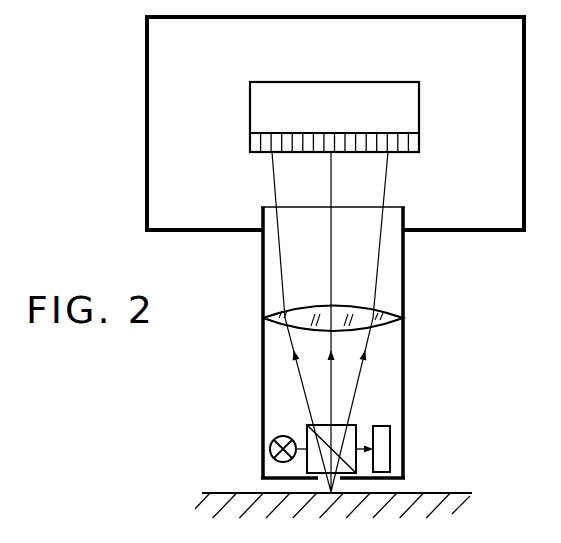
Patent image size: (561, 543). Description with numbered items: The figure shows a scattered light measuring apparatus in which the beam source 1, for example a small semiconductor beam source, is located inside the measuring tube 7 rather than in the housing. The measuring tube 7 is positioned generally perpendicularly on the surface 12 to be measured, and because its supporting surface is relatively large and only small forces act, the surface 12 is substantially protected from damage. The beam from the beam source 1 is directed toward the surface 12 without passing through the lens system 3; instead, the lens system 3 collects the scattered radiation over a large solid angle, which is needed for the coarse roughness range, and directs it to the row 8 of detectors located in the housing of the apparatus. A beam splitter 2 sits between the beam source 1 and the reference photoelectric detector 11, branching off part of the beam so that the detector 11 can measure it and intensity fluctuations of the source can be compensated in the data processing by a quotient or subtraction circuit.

The beam source 1 is at (270, 449).
The beam splitter 2 is at (306, 428).
The lens system 3 is at (302, 308).
The measuring tube 7 is at (405, 346).
The row of detectors 8 is at (382, 82).
The photoelectric detector 11 is at (385, 455).
The surface 12 is at (251, 489).